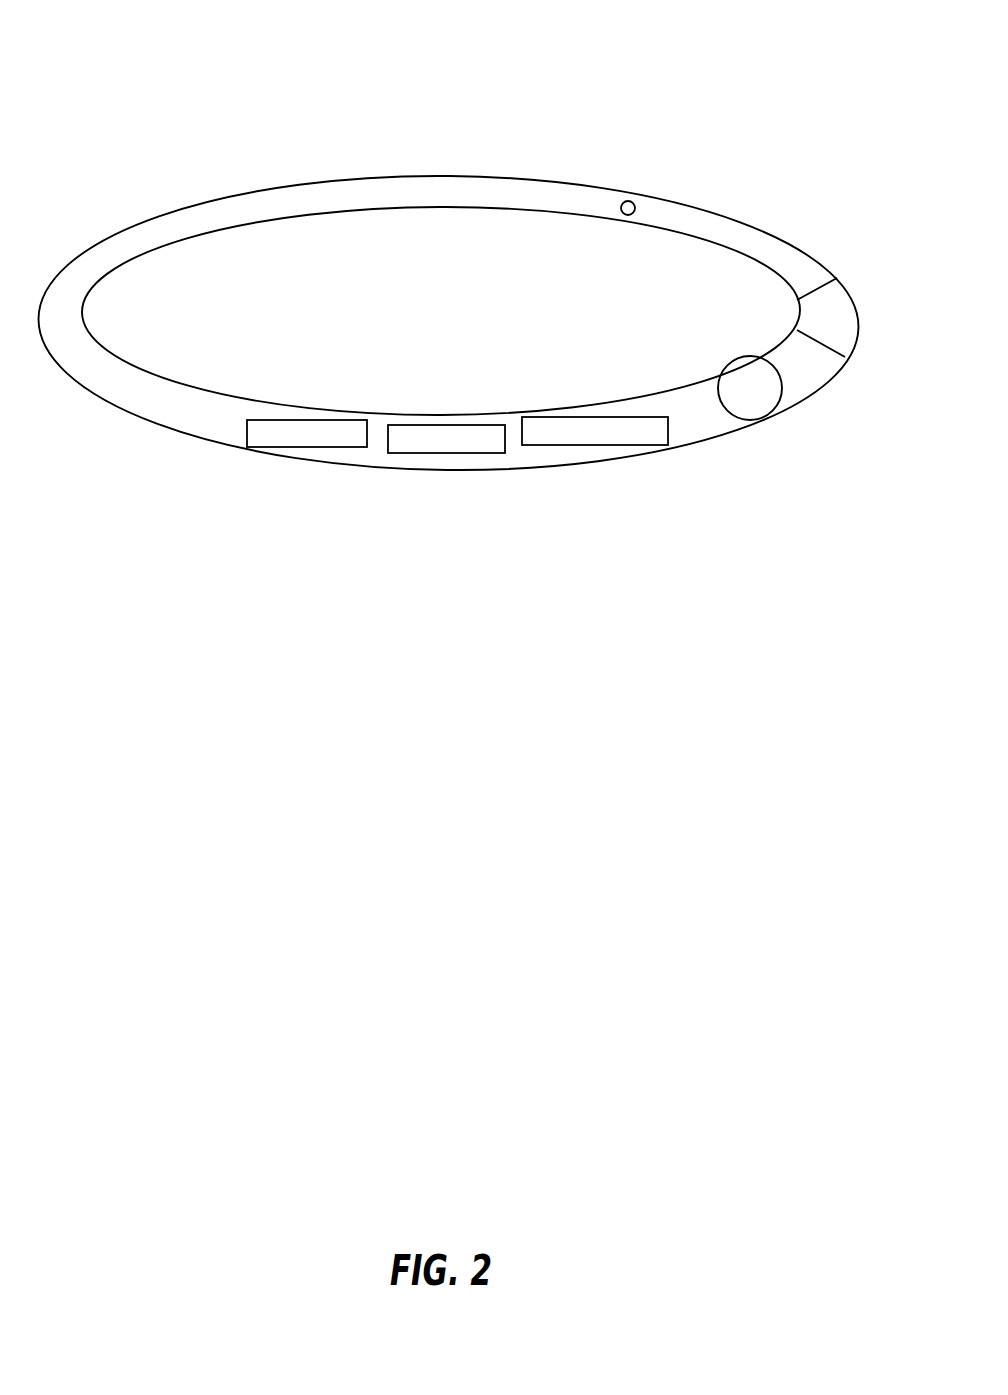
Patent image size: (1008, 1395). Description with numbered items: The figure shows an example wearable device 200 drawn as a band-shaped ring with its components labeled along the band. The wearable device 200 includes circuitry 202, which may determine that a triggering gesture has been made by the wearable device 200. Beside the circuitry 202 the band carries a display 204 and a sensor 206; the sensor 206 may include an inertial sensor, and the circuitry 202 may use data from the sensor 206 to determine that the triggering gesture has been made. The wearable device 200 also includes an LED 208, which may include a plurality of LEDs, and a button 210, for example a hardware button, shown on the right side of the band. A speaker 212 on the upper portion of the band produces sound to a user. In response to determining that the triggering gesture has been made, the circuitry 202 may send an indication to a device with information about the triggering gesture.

The wearable device 200 is at (729, 38).
The circuitry 202 is at (577, 445).
The display 204 is at (428, 453).
The sensor 206 is at (247, 447).
The LED 208 is at (740, 418).
The button 210 is at (817, 313).
The speaker 212 is at (634, 203).